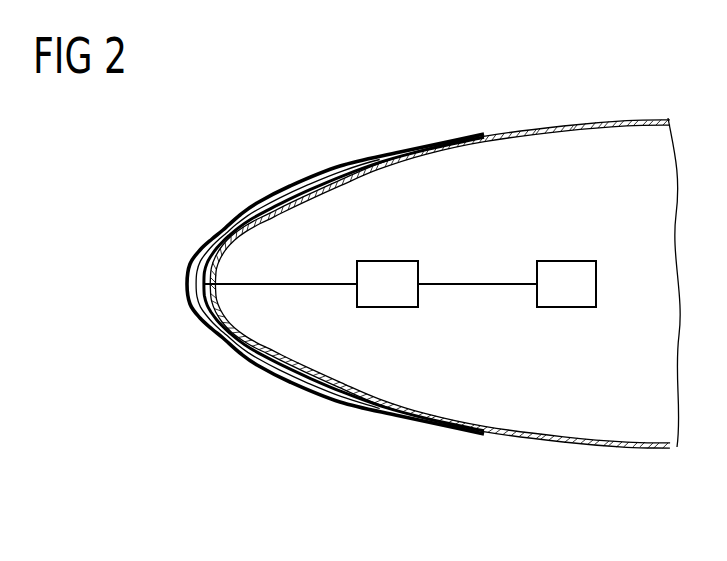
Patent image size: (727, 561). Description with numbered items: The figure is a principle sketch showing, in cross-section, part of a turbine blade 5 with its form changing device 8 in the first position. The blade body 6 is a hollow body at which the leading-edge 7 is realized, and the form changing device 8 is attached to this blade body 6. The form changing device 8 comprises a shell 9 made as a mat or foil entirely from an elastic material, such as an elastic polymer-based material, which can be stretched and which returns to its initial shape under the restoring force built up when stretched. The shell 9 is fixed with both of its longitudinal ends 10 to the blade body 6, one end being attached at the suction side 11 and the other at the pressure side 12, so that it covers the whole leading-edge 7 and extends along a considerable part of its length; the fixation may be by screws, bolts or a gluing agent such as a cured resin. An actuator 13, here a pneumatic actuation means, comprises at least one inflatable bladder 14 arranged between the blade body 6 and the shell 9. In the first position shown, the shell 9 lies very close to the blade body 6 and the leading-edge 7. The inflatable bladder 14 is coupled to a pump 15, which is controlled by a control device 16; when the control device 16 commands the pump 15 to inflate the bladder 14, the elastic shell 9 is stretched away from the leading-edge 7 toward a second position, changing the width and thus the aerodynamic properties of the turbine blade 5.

The turbine blade 5 is at (337, 450).
The blade body 6 is at (625, 449).
The leading-edge 7 is at (216, 289).
The form changing device 8 is at (168, 324).
The shell 9 is at (198, 250).
The longitudinal ends 10 is at (478, 133).
The suction side 11 is at (577, 126).
The pressure side 12 is at (572, 441).
The actuator 13 is at (271, 271).
The inflatable bladder 14 is at (202, 289).
The pump 15 is at (388, 261).
The control device 16 is at (569, 261).